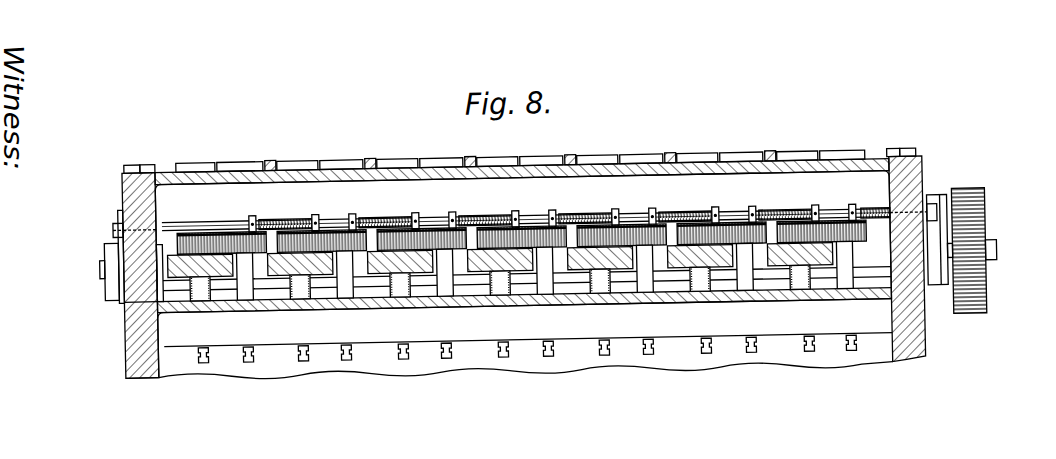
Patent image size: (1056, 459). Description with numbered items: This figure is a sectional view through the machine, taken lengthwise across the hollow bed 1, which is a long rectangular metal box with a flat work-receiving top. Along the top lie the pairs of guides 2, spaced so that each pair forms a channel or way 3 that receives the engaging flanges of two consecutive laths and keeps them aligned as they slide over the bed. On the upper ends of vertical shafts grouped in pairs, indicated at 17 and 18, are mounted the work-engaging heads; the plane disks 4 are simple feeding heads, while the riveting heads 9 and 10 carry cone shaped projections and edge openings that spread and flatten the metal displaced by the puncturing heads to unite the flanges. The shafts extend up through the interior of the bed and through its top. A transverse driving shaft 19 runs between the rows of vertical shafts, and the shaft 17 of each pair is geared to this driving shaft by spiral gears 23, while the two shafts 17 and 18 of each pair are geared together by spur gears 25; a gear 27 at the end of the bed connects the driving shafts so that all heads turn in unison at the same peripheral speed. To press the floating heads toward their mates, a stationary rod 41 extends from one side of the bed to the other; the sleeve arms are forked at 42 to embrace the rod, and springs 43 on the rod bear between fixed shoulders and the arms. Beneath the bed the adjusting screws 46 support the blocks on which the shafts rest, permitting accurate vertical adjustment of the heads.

The hollow bed 1 is at (170, 173).
The guides 2 is at (272, 164).
The channel or way 3 is at (373, 162).
The plane disks 4 is at (307, 171).
The riveting disk 9 is at (99, 232).
The riveting disk 10 is at (255, 135).
The vertical shaft 17 is at (500, 287).
The vertical shaft 18 is at (443, 281).
The transverse driving shaft 19 is at (996, 266).
The spiral gears 23 is at (392, 280).
The spur gears 25 is at (436, 225).
The gear 27 is at (965, 204).
The stationary rod 41 is at (344, 228).
The forked end 42 is at (244, 223).
The springs 43 is at (296, 226).
The adjusting screw 46 is at (395, 368).